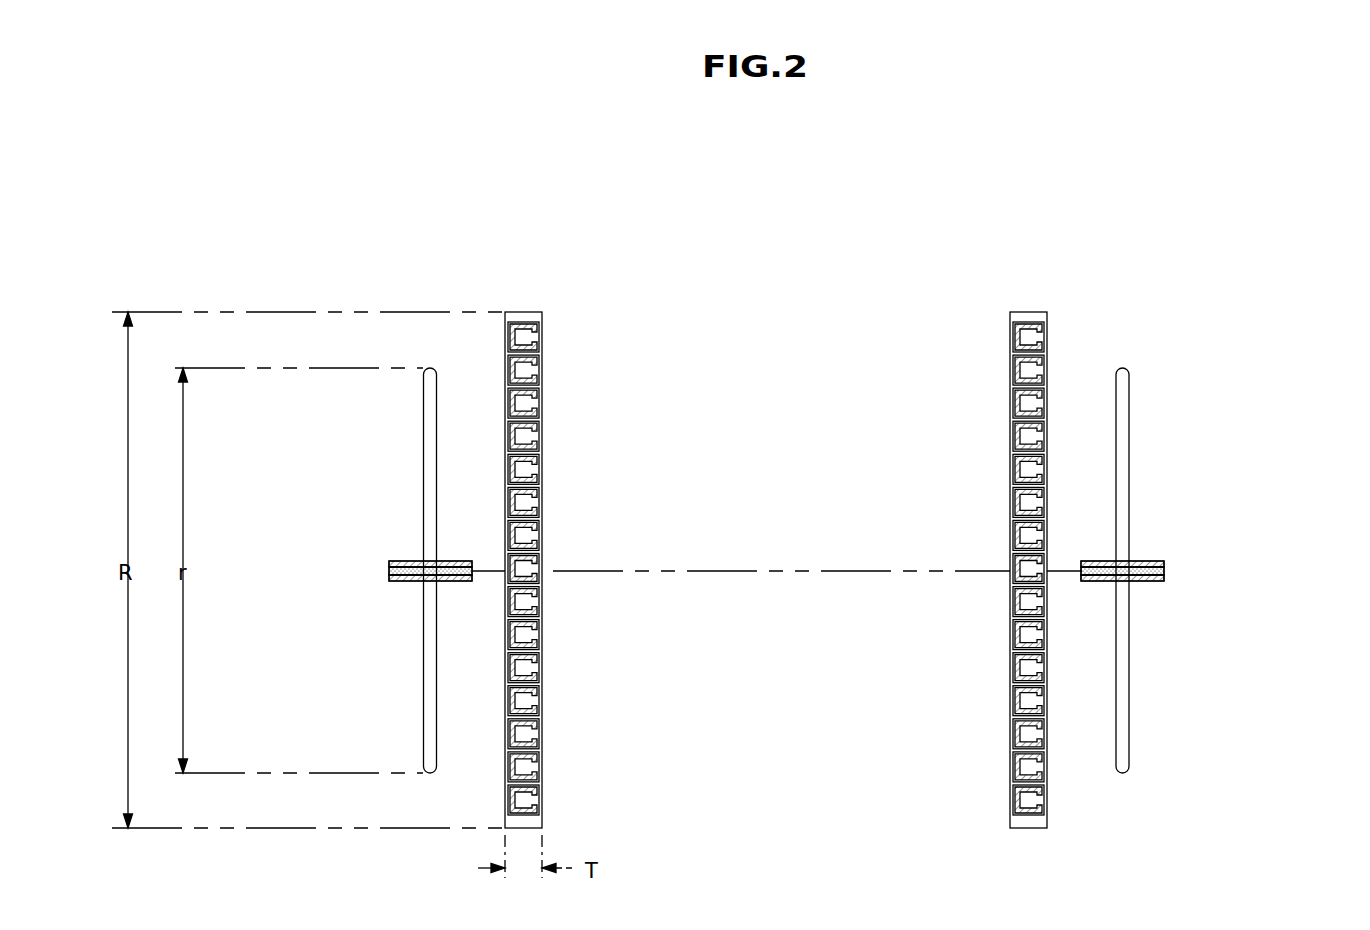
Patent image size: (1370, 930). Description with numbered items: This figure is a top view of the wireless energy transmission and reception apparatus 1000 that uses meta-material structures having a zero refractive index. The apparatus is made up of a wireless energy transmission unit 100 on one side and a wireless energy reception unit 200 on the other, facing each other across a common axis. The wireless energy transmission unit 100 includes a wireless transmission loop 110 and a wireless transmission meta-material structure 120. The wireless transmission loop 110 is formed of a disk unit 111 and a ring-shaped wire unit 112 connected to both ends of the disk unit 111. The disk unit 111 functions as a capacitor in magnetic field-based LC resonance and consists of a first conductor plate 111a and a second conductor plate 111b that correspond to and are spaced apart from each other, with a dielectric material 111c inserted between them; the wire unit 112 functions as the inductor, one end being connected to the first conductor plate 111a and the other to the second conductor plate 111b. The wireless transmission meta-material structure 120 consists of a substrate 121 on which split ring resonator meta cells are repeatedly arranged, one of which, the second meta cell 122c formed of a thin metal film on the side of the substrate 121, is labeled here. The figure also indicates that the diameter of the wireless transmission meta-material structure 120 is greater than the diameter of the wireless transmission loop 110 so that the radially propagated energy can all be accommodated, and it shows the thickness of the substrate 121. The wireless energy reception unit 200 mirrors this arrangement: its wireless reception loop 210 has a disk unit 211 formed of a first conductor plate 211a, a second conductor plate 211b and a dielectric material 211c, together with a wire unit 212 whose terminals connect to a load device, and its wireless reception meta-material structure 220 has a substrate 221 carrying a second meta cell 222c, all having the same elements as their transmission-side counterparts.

The apparatus 1000 is at (790, 175).
The wireless energy transmission unit 100 is at (430, 492).
The wireless transmission loop 110 is at (353, 488).
The disk unit 111 is at (346, 577).
The first conductor plate 111a is at (393, 580).
The second conductor plate 111b is at (392, 563).
The dielectric material 111c is at (392, 571).
The wire unit 112 is at (425, 463).
The wireless transmission meta-material structure 120 is at (572, 517).
The substrate 121 is at (537, 824).
The second meta cell 122c is at (537, 797).
The wireless energy reception unit 200 is at (1122, 522).
The wireless reception loop 210 is at (1199, 488).
The disk unit 211 is at (1207, 576).
The first conductor plate 211a is at (1158, 580).
The second conductor plate 211b is at (1160, 563).
The dielectric material 211c is at (1160, 571).
The wire unit 212 is at (1123, 465).
The wireless reception meta-material structure 220 is at (979, 547).
The substrate 221 is at (1027, 826).
The second meta cell 222c is at (1015, 800).